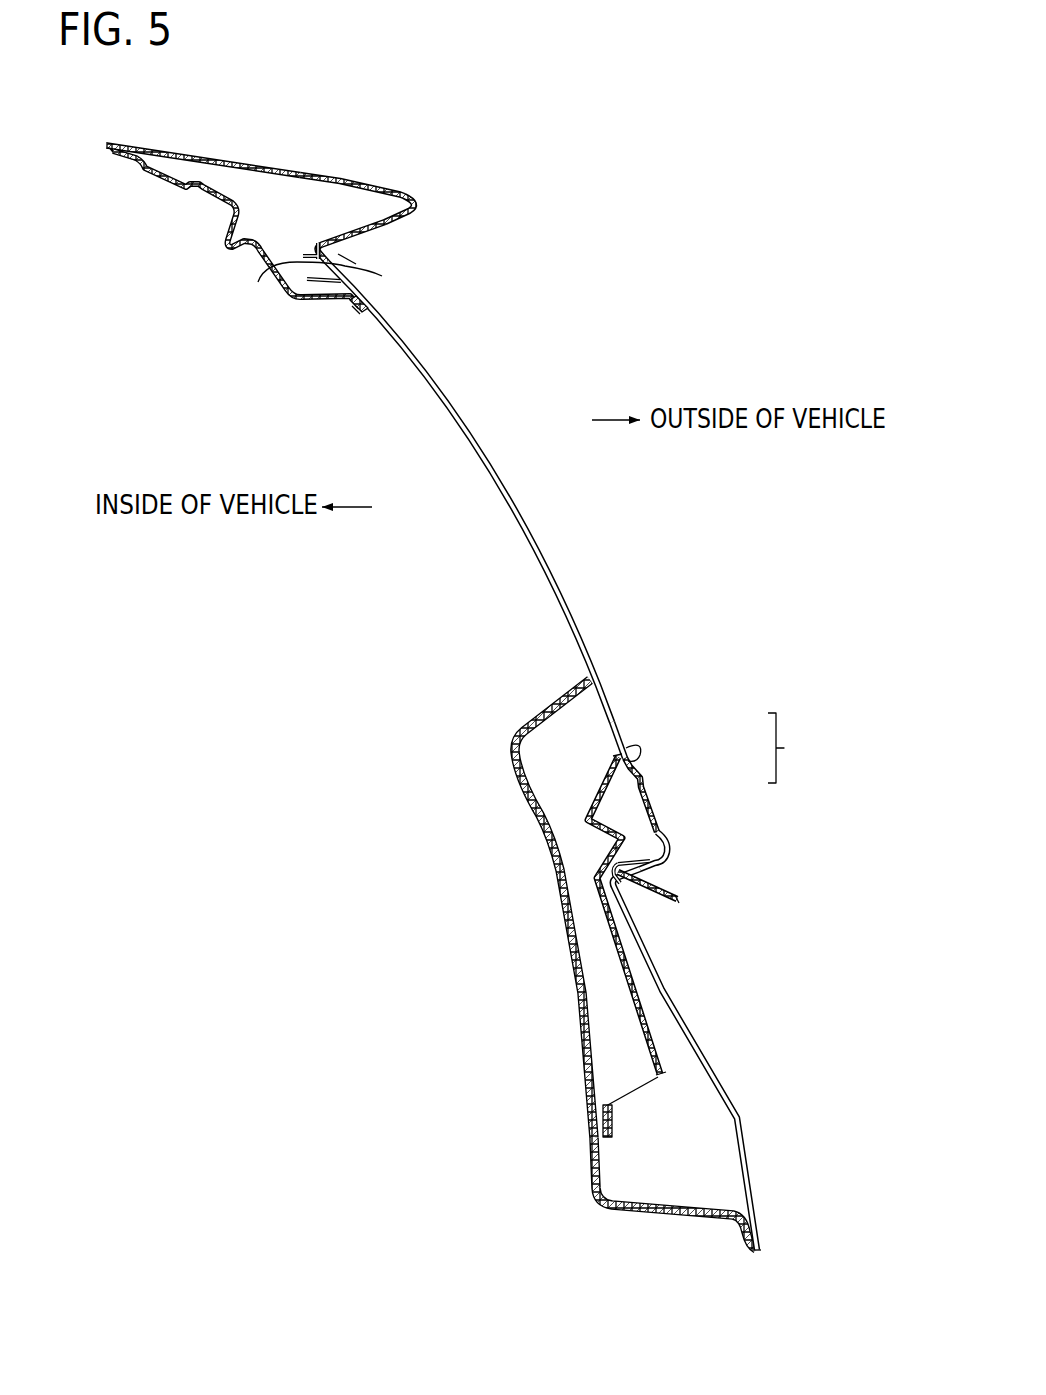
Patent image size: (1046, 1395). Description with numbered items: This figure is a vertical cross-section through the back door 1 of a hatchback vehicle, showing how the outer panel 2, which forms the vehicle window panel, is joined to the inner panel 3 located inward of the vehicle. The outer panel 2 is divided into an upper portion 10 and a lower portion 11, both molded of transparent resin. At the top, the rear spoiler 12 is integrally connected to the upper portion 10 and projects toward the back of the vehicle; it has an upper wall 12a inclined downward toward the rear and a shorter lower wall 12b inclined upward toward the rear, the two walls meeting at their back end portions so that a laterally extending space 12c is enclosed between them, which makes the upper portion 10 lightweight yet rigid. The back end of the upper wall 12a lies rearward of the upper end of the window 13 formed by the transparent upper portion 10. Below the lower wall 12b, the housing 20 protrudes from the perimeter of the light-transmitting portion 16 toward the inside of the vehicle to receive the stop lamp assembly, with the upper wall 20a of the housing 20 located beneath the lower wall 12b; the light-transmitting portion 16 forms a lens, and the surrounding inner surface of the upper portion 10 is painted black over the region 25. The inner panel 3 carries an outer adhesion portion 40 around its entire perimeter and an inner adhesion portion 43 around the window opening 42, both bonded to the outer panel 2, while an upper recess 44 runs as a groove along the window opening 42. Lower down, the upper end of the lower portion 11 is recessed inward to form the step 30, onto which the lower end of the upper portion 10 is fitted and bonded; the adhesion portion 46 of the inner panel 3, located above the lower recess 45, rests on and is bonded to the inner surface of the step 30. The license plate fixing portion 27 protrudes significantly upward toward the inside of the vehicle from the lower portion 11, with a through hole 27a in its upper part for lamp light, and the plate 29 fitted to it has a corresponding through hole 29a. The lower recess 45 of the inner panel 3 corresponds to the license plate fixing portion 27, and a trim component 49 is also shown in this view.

The back door 1 is at (274, 150).
The outer panel 2 is at (787, 748).
The inner panel 3 is at (222, 240).
The upper portion 10 is at (613, 706).
The lower portion 11 is at (652, 808).
The rear spoiler 12 is at (208, 155).
The upper wall 12a is at (394, 189).
The lower wall 12b is at (397, 219).
The space 12c is at (335, 192).
The window 13 is at (473, 442).
The light-transmitting portion 16 is at (344, 266).
The housing 20 is at (321, 285).
The upper wall 20a is at (309, 254).
The region painted with black paint 25 is at (364, 284).
The license plate fixing portion 27 is at (662, 982).
The through hole 27a is at (655, 833).
The plate 29 is at (670, 860).
The through hole 29a is at (630, 876).
The step 30 is at (626, 751).
The outer adhesion portion 40 is at (112, 153).
The window opening 42 is at (358, 313).
The inner adhesion portion 43 is at (366, 300).
The upper recess 44 is at (348, 257).
The lower recess 45 is at (602, 1168).
The adhesion portion 46 is at (622, 768).
The trim component 49 is at (558, 698).